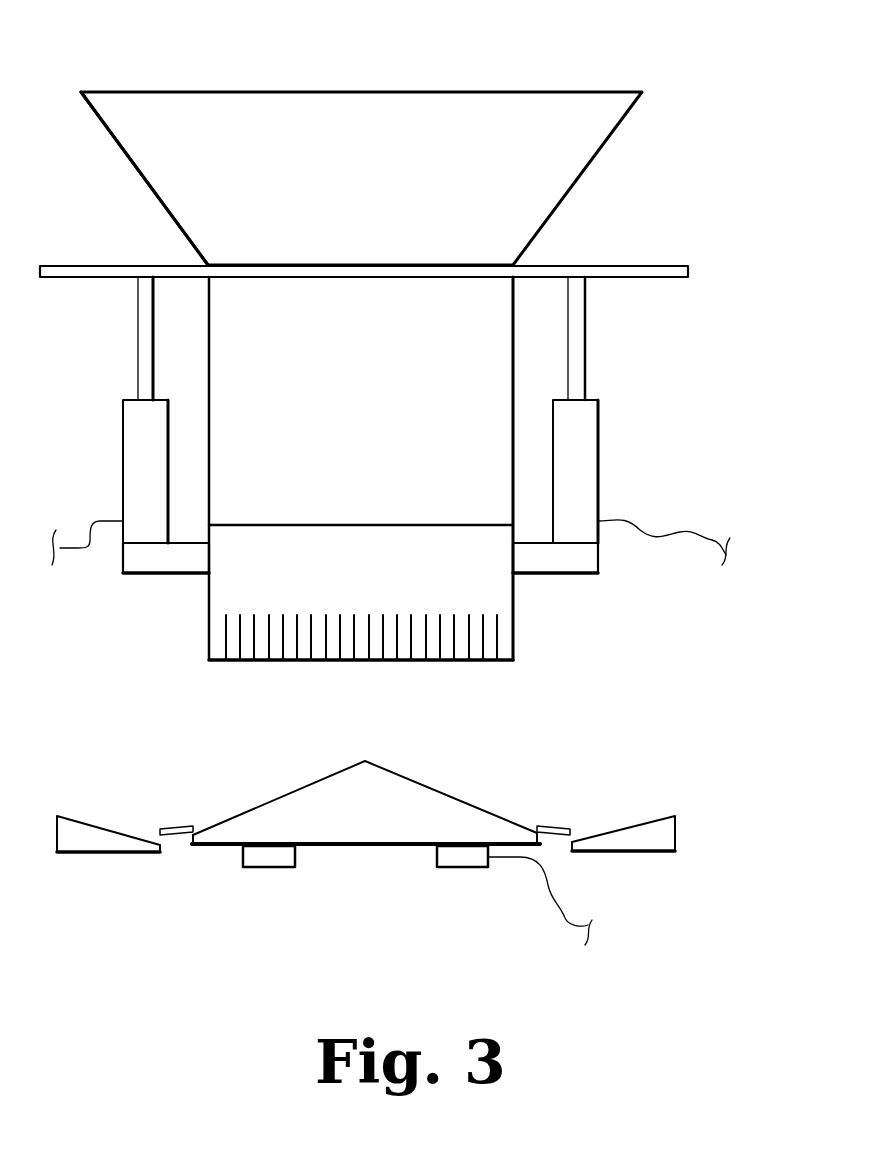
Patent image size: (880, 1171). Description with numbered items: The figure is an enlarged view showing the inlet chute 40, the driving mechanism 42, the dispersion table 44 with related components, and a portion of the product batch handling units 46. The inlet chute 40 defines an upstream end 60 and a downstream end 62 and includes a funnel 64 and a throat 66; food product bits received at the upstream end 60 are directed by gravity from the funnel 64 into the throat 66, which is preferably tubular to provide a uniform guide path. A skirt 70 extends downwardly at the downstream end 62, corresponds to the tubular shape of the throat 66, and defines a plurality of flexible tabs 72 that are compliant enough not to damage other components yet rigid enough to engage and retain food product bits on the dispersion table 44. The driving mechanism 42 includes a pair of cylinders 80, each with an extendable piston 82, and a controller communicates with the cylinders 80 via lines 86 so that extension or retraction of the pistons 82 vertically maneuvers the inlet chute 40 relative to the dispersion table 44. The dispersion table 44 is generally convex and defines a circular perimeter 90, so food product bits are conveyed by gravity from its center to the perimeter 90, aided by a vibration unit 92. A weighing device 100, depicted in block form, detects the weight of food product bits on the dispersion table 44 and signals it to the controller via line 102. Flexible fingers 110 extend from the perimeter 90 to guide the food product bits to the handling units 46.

The inlet chute 40 is at (650, 180).
The driving mechanism 42 is at (670, 442).
The dispersion table 44 is at (375, 862).
The product batch handling units 46 is at (672, 805).
The upstream end 60 is at (500, 120).
The downstream end 62 is at (228, 590).
The funnel 64 is at (155, 193).
The throat 66 is at (207, 350).
The skirt 70 is at (492, 571).
The flexible tabs 72 is at (404, 662).
The cylinders 80 is at (105, 453).
The extendable piston 82 is at (143, 370).
The lines 86 is at (79, 548).
The circular perimeter 90 is at (186, 840).
The vibration unit 92 is at (270, 868).
The weighing device 100 is at (462, 868).
The line 102 is at (562, 930).
The flexible fingers 110 is at (172, 825).